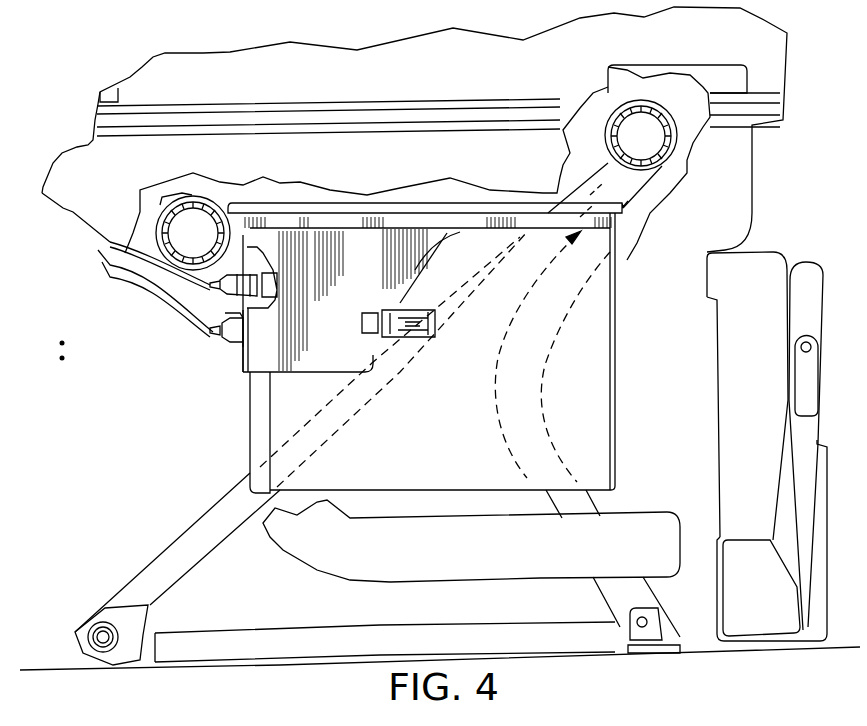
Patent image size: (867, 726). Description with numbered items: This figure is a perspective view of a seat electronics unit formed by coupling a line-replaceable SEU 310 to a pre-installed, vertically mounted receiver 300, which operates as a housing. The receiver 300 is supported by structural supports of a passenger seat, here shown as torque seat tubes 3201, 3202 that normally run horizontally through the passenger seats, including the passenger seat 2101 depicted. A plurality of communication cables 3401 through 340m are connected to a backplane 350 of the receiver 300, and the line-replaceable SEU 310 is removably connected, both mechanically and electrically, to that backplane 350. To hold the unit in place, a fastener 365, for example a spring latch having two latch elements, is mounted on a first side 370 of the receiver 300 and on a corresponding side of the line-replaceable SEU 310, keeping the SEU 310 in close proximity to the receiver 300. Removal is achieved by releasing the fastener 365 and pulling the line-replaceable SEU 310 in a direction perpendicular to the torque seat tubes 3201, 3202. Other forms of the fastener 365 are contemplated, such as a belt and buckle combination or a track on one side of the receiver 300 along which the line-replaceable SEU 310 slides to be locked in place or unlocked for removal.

The passenger seat 2101 is at (205, 62).
The torque seat tube 3202 is at (642, 103).
The torque seat tube 3201 is at (152, 250).
The communication cable 3401 is at (178, 311).
The communication cable 340m is at (140, 325).
The backplane 350 is at (243, 360).
The receiver 300 is at (287, 357).
The fastener 365 is at (403, 338).
The first side 370 is at (447, 233).
The line-replaceable SEU 310 is at (612, 324).